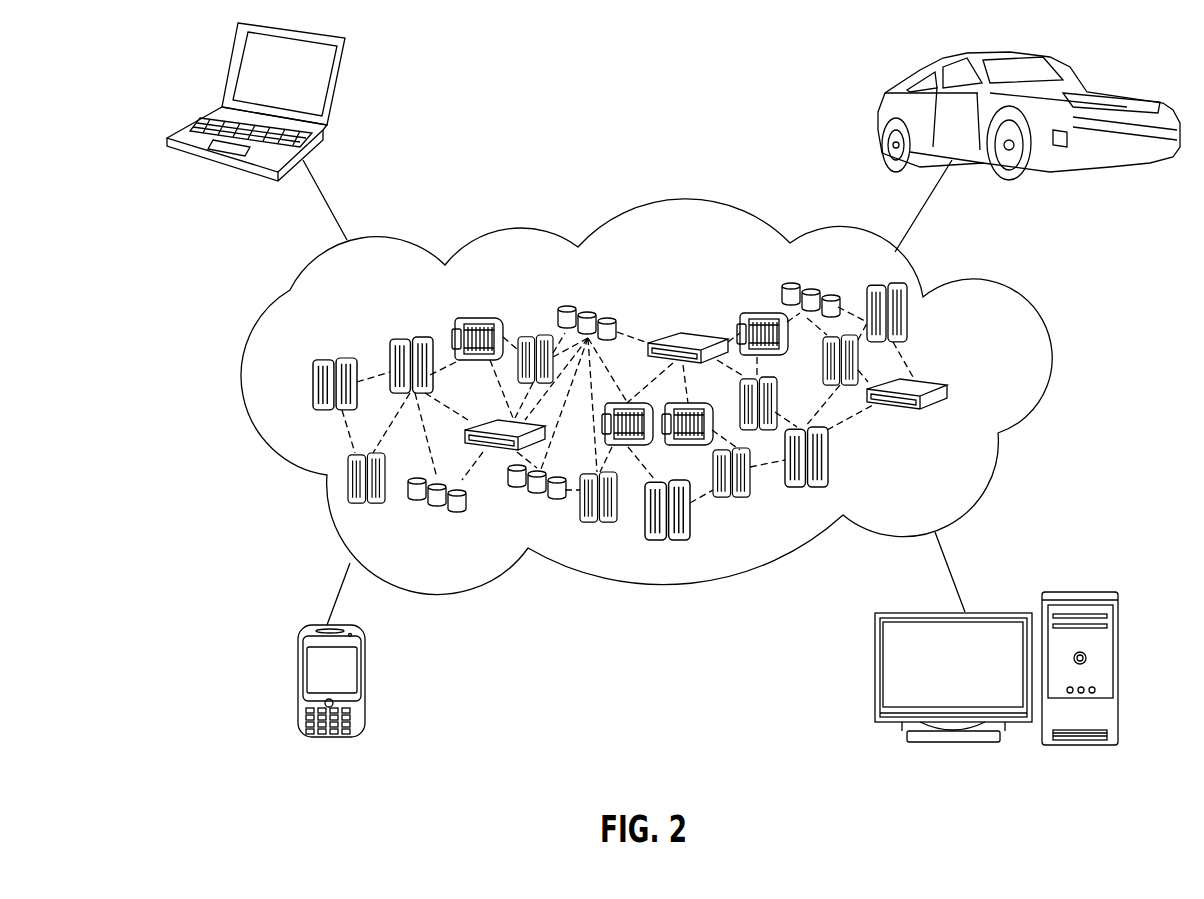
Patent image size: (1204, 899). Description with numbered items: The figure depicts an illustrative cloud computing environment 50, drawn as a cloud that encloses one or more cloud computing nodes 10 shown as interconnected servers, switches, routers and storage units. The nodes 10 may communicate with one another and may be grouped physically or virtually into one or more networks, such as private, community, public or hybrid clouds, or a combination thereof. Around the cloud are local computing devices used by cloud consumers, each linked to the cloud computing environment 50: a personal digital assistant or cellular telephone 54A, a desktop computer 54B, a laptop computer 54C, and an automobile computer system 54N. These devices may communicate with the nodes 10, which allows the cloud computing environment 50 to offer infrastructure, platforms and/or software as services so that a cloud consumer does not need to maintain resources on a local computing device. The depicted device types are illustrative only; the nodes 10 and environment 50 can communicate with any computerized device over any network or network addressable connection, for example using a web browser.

The cloud computing node 10 is at (985, 390).
The cloud computing environment 50 is at (1007, 307).
The personal digital assistant or cellular telephone 54A is at (298, 683).
The desktop computer 54B is at (1082, 590).
The laptop computer 54C is at (335, 90).
The automobile computer system 54N is at (885, 95).